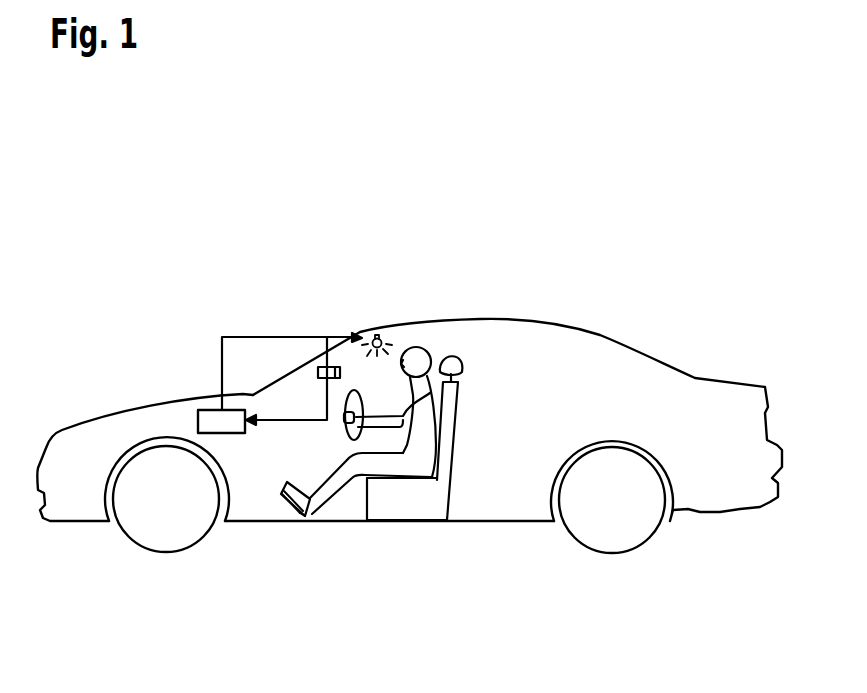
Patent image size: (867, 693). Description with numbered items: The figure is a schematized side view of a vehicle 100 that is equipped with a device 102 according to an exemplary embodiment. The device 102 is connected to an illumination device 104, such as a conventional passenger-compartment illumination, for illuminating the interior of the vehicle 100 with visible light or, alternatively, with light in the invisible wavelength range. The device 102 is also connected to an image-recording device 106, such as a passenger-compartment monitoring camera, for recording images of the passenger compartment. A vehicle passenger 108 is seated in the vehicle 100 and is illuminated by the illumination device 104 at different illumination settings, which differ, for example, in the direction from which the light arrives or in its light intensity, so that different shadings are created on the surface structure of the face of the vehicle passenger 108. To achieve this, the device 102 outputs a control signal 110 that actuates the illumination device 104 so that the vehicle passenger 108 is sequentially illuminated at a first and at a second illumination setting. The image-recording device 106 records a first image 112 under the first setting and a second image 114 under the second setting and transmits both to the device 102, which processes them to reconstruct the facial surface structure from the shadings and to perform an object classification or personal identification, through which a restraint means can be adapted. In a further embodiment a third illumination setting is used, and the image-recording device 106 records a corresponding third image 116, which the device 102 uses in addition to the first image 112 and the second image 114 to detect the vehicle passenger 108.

The vehicle 100 is at (600, 334).
The device 102 is at (208, 410).
The illumination device 104 is at (380, 336).
The image-recording device 106 is at (327, 367).
The vehicle passenger 108 is at (427, 347).
The control signal 110 is at (267, 337).
The first image 112 is at (264, 421).
The second image 114 is at (274, 546).
The third image 116 is at (321, 556).